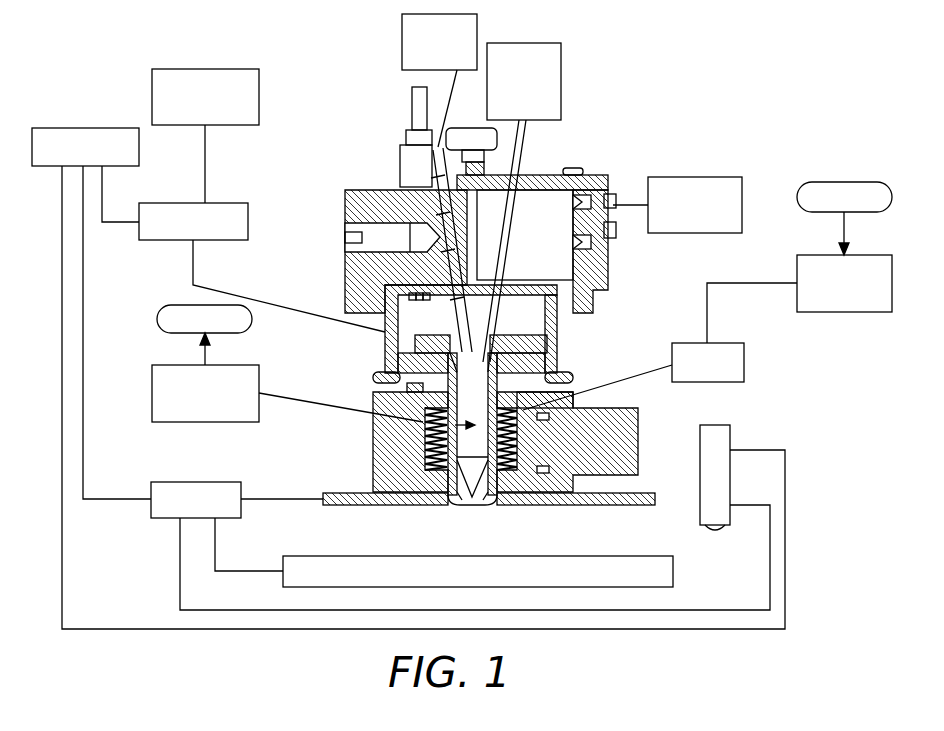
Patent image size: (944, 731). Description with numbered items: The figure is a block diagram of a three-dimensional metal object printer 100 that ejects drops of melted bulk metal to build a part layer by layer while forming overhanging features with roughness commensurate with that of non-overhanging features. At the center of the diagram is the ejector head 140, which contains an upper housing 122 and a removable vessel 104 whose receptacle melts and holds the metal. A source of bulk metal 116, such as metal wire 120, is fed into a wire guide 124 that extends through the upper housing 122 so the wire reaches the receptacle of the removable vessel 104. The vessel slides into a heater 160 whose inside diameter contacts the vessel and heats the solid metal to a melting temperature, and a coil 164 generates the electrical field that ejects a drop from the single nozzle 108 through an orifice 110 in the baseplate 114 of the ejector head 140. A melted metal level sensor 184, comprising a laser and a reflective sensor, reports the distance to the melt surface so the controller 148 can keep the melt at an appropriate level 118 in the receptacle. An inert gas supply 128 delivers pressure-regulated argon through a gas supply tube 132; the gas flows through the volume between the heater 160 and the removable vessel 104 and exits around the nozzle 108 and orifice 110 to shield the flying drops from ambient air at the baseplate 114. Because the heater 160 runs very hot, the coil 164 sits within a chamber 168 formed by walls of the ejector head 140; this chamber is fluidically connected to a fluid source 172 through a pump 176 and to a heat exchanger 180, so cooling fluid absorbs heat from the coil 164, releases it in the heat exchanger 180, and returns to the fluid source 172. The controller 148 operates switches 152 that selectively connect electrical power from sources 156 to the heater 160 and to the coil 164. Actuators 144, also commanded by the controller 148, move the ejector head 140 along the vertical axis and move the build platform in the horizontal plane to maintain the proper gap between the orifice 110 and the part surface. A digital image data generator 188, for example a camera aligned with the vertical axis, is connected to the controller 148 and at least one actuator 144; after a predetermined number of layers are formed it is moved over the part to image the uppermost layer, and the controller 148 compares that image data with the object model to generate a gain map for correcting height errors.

The 3D metal object printer 100 is at (683, 97).
The removable vessel 104 is at (466, 427).
The nozzle 108 is at (473, 500).
The orifice 110 is at (452, 500).
The baseplate 114 is at (645, 492).
The source of bulk metal 116 is at (402, 45).
The level 118 is at (468, 387).
The metal wire 120 is at (437, 363).
The upper housing 122 is at (368, 192).
The wire guide 124 is at (447, 308).
The inert gas supply 128 is at (694, 177).
The gas supply tube 132 is at (632, 204).
The ejector head 140 is at (292, 292).
The actuators 144 is at (241, 517).
The controller 148 is at (74, 128).
The switches 152 is at (248, 222).
The electrical power source 156 is at (152, 96).
The heater 160 is at (523, 384).
The coil 164 is at (535, 447).
The chamber 168 is at (420, 410).
The fluid source 172 is at (843, 312).
The pump 176 is at (744, 362).
The heat exchanger 180 is at (205, 422).
The melted metal level sensor 184 is at (561, 67).
The digital image data generator 188 is at (721, 425).